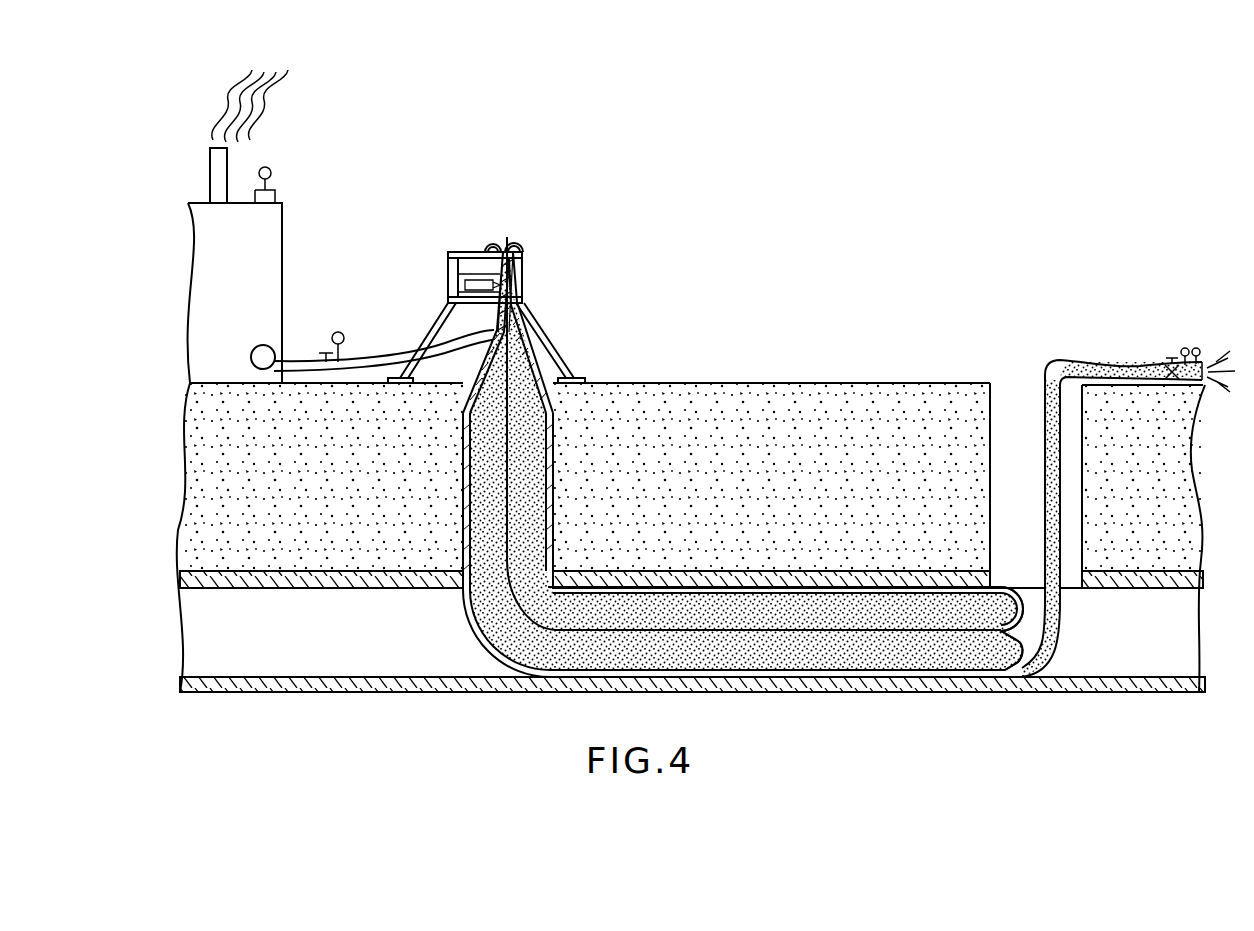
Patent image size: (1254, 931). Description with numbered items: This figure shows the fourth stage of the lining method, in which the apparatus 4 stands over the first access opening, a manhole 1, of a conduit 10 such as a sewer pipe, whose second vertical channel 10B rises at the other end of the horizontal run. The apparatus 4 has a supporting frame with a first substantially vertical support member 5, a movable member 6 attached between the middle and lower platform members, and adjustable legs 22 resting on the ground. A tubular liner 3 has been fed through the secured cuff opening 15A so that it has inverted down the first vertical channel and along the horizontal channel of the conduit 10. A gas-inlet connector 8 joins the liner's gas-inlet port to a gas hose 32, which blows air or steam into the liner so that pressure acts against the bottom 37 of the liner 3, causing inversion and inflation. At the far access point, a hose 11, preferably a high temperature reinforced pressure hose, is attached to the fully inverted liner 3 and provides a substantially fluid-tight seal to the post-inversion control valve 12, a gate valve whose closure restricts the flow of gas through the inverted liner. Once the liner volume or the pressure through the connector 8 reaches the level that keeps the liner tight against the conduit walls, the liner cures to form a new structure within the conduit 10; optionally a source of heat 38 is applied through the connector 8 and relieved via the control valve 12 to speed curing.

The manhole 1 is at (552, 383).
The tubular liner 3 is at (507, 487).
The apparatus 4 is at (468, 219).
The first substantially vertical support member 5 is at (522, 278).
The movable member 6 is at (478, 268).
The gas-inlet connector 8 is at (493, 332).
The conduit 10 is at (364, 634).
The second vertical channel 10B is at (1003, 499).
The hose 11 is at (1048, 353).
The post-inversion control valve 12 is at (1168, 346).
The cuff opening 15A is at (505, 243).
The adjustable legs 22 is at (433, 336).
The gas hose 32 is at (364, 363).
The bottom of liner 37 is at (1025, 612).
The source of heat 38 is at (296, 211).